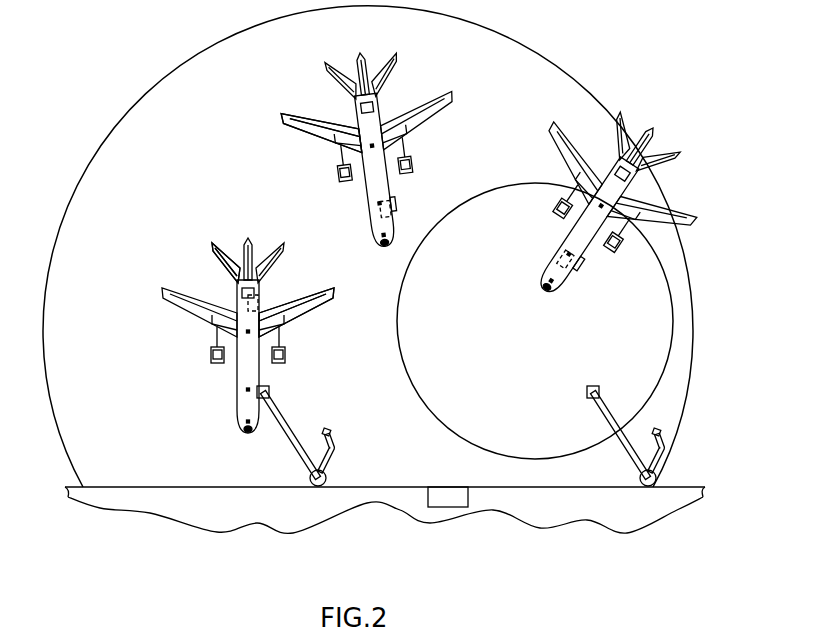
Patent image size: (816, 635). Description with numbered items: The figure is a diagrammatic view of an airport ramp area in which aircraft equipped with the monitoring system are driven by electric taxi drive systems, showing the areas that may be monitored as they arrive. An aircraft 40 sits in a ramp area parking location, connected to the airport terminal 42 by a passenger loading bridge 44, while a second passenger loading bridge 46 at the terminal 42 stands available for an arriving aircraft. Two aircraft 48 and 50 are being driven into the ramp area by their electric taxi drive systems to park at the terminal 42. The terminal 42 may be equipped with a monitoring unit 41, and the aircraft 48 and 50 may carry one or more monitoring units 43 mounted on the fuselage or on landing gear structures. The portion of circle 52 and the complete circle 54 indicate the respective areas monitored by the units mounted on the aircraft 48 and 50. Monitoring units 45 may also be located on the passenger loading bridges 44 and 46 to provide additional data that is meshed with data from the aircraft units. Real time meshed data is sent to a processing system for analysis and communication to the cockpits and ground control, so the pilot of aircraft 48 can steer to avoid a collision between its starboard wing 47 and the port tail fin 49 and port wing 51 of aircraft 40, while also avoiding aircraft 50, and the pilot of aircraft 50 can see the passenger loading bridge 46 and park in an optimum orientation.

The aircraft 40 is at (211, 396).
The monitoring unit 41 is at (450, 499).
The airport terminal 42 is at (392, 497).
The monitoring unit 43 is at (259, 303).
The passenger loading bridge 44 is at (292, 446).
The monitoring unit 45 is at (270, 392).
The passenger loading bridge 46 is at (622, 452).
The starboard wing 47 is at (282, 119).
The aircraft 48 is at (295, 95).
The port tail fin 49 is at (286, 249).
The aircraft 50 is at (680, 133).
The port wing 51 is at (310, 313).
The circle 52 is at (116, 126).
The circle 54 is at (499, 186).